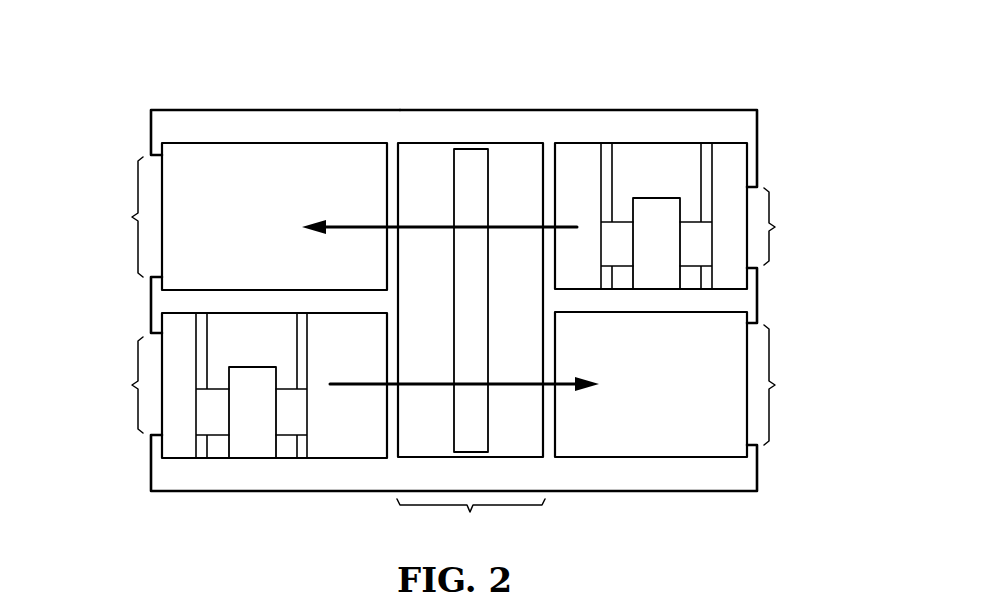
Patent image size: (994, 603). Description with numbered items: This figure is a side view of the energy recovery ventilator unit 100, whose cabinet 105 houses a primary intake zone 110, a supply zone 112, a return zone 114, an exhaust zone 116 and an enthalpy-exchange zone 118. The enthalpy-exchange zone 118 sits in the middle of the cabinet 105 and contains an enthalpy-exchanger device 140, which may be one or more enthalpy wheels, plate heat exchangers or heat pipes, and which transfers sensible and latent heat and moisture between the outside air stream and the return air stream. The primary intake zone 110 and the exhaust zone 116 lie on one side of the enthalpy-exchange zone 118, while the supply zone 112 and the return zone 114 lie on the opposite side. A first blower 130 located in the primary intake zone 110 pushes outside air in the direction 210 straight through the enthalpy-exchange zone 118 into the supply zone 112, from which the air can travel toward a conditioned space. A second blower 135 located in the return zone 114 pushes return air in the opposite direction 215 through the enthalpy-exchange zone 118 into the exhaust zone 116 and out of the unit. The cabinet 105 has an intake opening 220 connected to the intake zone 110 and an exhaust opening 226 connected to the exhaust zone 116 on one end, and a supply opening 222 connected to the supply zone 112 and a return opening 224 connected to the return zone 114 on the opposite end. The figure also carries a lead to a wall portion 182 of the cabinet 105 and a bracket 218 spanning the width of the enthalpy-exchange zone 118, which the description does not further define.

The energy recovery ventilator unit 100 is at (636, 55).
The cabinet 105 is at (740, 95).
The housing wall 182 is at (140, 124).
The primary intake zone 110 is at (676, 179).
The supply zone 112 is at (273, 237).
The return zone 114 is at (273, 347).
The exhaust zone 116 is at (619, 360).
The enthalpy-exchange zone 118 is at (425, 167).
The enthalpy-exchanger device 140 is at (491, 170).
The first blower 130 is at (648, 283).
The second blower 135 is at (252, 448).
The direction of outside air 210 is at (352, 225).
The opposite direction 215 is at (563, 387).
The passage width 218 is at (471, 522).
The intake opening 220 is at (795, 226).
The supply opening 222 is at (112, 217).
The return opening 224 is at (112, 385).
The exhaust opening 226 is at (796, 385).